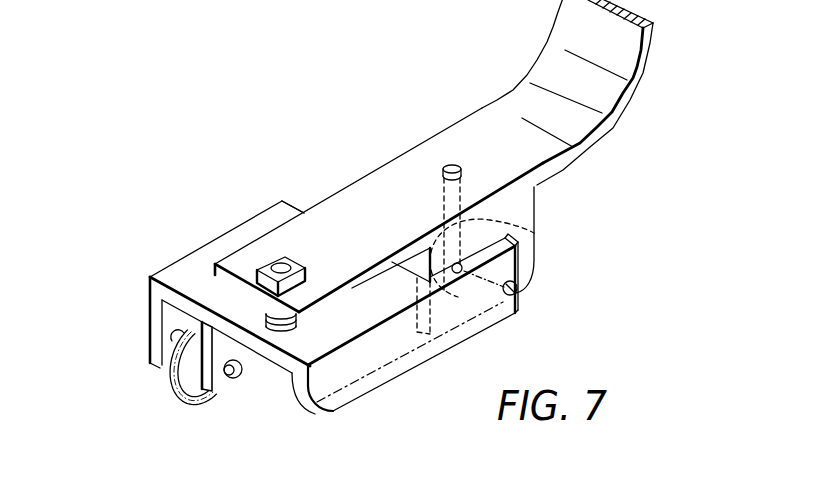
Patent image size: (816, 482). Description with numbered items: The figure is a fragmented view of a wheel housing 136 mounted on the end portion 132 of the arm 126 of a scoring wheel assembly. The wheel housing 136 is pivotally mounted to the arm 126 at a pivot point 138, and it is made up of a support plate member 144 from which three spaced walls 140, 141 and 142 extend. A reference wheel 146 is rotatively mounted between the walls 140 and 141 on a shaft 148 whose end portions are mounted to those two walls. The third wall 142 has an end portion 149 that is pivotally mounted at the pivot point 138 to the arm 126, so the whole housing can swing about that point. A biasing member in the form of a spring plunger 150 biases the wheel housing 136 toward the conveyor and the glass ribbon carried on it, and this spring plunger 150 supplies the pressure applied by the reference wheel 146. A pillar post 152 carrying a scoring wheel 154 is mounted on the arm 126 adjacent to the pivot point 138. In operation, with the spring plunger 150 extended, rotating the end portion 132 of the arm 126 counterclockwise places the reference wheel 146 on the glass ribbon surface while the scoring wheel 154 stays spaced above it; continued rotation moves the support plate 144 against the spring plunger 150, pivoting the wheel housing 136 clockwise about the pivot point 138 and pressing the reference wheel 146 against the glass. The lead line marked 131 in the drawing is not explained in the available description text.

The arm 126 is at (603, 154).
The mounting plate 131 is at (240, 262).
The end portion 132 is at (333, 228).
The wheel housing 136 is at (106, 389).
The pivot point 138 is at (518, 292).
The wall 140 is at (150, 337).
The wall 141 is at (228, 393).
The wall 142 is at (308, 410).
The support plate member 144 is at (182, 267).
The reference wheel 146 is at (188, 405).
The shaft 148 is at (240, 376).
The end portion 149 is at (465, 326).
The spring plunger 150 is at (283, 258).
The pillar post 152 is at (449, 160).
The scoring wheel 154 is at (536, 232).